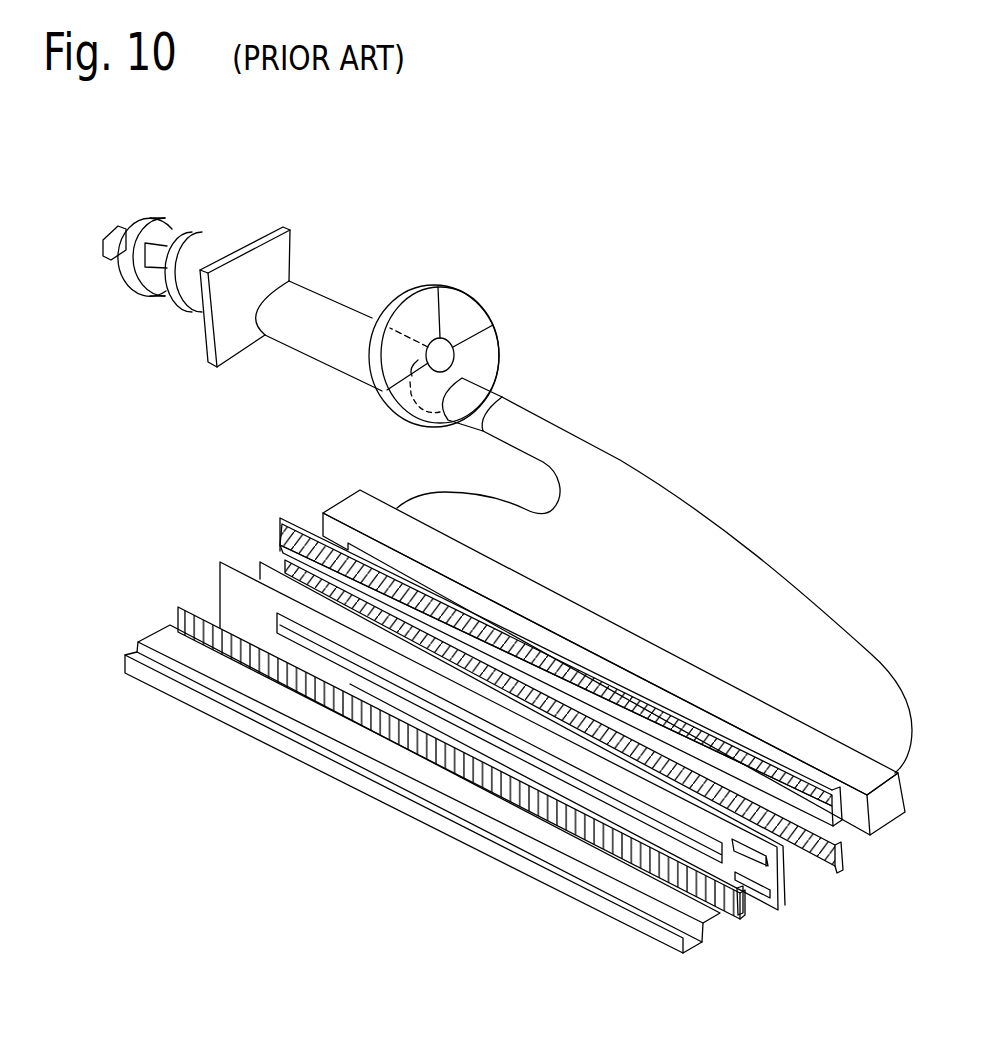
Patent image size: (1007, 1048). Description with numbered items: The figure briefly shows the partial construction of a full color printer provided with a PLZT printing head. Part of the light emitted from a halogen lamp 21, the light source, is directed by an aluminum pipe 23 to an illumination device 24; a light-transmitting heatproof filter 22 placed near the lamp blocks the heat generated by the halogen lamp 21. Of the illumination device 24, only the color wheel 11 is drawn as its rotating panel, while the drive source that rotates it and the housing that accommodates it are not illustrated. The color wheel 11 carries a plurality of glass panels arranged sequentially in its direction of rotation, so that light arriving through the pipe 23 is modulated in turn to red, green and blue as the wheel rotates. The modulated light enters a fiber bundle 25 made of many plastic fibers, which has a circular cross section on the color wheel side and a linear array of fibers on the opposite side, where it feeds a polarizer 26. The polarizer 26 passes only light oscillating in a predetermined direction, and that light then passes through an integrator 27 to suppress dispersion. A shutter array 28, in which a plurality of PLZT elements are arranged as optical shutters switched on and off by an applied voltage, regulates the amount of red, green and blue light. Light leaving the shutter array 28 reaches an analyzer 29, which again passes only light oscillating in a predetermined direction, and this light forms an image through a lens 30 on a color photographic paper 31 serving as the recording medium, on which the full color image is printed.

The color wheel 11 is at (499, 341).
The halogen lamp 21 is at (162, 240).
The light-transmitting heatproof filter 22 is at (242, 223).
The aluminum pipe 23 is at (343, 315).
The illumination device 24 is at (498, 278).
The fiber bundle 25 is at (683, 523).
The polarizer 26 is at (728, 753).
The integrator 27 is at (810, 868).
The shutter array 28 is at (783, 893).
The analyzer 29 is at (742, 908).
The lens 30 is at (717, 930).
The color photographic paper 31 is at (575, 890).